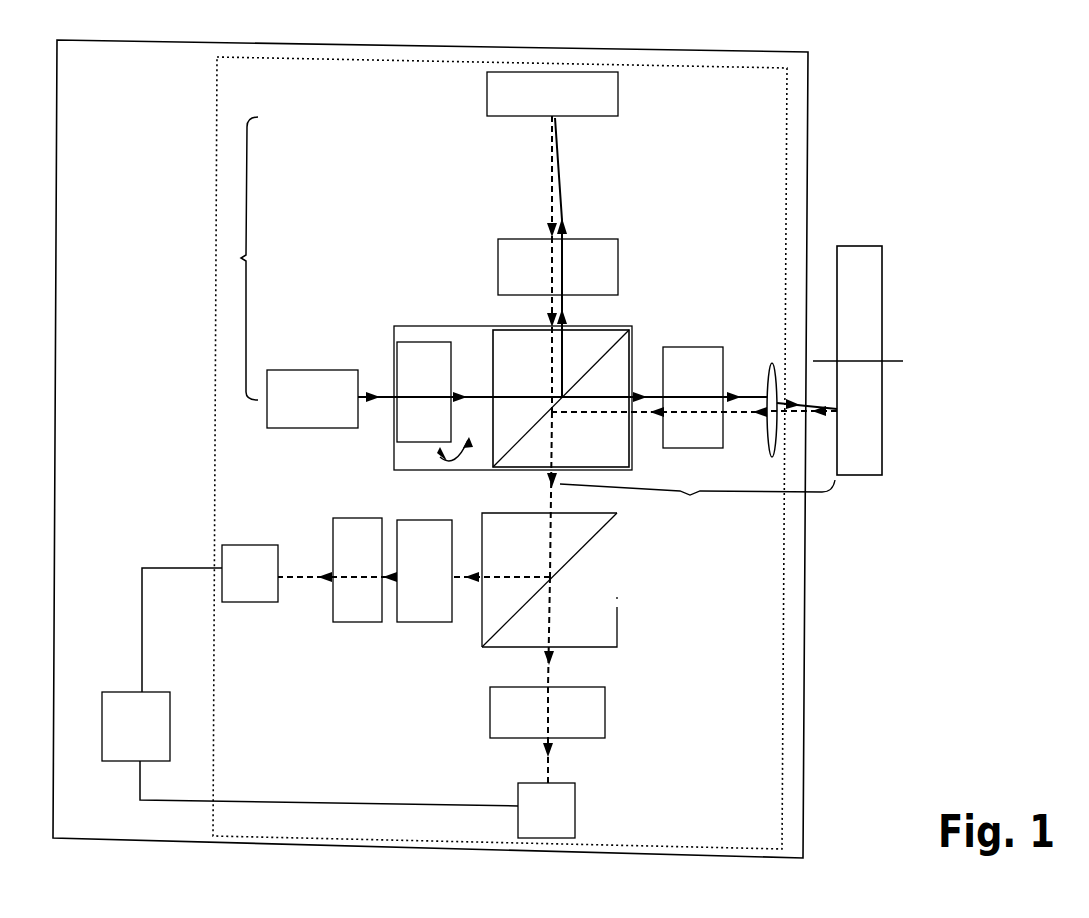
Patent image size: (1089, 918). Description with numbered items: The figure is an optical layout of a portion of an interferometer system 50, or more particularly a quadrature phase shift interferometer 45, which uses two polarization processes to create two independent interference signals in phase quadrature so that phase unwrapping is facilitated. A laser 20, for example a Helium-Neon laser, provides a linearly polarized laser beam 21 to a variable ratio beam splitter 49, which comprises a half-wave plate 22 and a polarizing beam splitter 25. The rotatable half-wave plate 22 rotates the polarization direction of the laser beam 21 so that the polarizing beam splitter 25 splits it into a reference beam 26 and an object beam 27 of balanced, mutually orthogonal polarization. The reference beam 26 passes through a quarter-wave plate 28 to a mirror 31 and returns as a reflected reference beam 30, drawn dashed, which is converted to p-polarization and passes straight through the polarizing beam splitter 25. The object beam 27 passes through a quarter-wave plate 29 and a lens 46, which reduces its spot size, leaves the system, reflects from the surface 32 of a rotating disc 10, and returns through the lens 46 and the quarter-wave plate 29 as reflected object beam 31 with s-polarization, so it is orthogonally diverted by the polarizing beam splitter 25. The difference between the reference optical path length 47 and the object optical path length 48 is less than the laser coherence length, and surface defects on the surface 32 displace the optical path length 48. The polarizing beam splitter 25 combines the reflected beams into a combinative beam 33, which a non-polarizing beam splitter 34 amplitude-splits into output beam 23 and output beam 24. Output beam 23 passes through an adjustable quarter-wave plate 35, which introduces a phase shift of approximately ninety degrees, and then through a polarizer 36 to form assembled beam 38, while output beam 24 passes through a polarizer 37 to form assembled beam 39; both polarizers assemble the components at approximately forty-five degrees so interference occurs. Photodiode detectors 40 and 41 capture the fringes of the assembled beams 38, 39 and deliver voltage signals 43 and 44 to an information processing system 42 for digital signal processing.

The disc medium 10 is at (858, 360).
The laser beam source 20 is at (312, 399).
The laser beam 21 is at (381, 399).
The half-wave plate 22 is at (435, 401).
The output beam 23 is at (476, 582).
The output beam 24 is at (552, 666).
The polarizing beam splitter 25 is at (561, 398).
The reference beam 26 is at (562, 310).
The object beam 27 is at (658, 398).
The quarter-wave plate 28 is at (558, 267).
The quarter-wave plate 29 is at (693, 397).
The reflected reference beam 30 is at (552, 218).
The mirror 31 is at (745, 425).
The surface 32 is at (836, 308).
The combinative beam 33 is at (555, 484).
The non-polarizing beam splitter 34 is at (549, 580).
The quarter-wave plate 35 is at (392, 571).
The polarizer 36 is at (357, 570).
The polarizer 37 is at (547, 712).
The assembled beam 38 is at (320, 578).
The assembled beam 39 is at (550, 757).
The optical detector 40 is at (250, 573).
The optical detector 41 is at (546, 810).
The information processing system 42 is at (136, 726).
The signal 43 is at (142, 640).
The signal 44 is at (270, 803).
The quadrature phase shift interferometer 45 is at (217, 202).
The lens 46 is at (771, 365).
The optical path length 47 is at (239, 258).
The optical path length 48 is at (697, 497).
The variable ratio beam splitter 49 is at (437, 326).
The interferometer system 50 is at (808, 157).